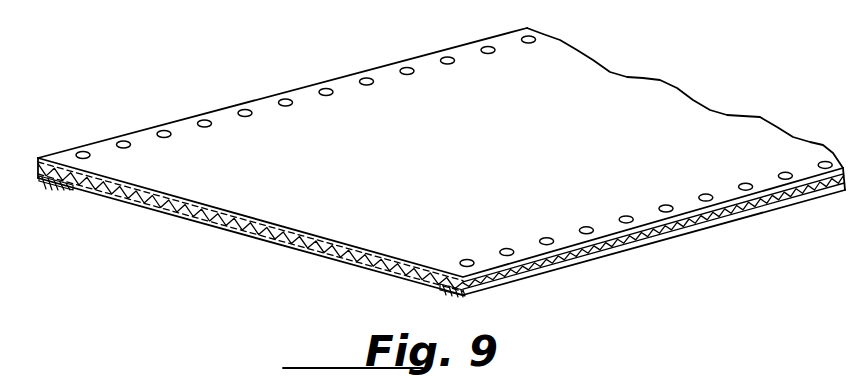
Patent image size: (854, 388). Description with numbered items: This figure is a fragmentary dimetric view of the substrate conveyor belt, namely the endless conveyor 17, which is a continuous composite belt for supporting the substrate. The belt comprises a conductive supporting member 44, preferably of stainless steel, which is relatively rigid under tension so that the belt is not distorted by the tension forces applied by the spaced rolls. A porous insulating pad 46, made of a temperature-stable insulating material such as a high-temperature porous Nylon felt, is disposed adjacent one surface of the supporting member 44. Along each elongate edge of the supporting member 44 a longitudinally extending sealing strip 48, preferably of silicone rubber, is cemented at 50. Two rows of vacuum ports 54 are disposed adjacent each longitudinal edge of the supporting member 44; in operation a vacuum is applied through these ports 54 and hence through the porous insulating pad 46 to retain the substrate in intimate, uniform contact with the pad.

The endless conveyor 17 is at (263, 97).
The conductive supporting member 44 is at (578, 67).
The porous insulating pad 46 is at (325, 252).
The sealing strips 48 is at (55, 183).
The cement 50 is at (581, 253).
The vacuum ports 54 is at (367, 78).